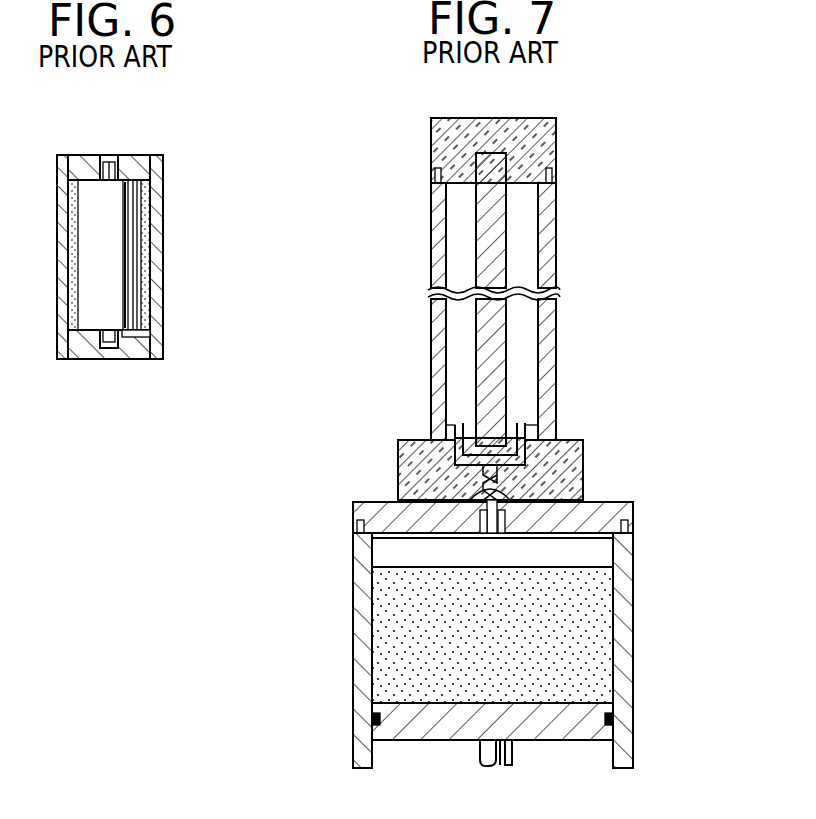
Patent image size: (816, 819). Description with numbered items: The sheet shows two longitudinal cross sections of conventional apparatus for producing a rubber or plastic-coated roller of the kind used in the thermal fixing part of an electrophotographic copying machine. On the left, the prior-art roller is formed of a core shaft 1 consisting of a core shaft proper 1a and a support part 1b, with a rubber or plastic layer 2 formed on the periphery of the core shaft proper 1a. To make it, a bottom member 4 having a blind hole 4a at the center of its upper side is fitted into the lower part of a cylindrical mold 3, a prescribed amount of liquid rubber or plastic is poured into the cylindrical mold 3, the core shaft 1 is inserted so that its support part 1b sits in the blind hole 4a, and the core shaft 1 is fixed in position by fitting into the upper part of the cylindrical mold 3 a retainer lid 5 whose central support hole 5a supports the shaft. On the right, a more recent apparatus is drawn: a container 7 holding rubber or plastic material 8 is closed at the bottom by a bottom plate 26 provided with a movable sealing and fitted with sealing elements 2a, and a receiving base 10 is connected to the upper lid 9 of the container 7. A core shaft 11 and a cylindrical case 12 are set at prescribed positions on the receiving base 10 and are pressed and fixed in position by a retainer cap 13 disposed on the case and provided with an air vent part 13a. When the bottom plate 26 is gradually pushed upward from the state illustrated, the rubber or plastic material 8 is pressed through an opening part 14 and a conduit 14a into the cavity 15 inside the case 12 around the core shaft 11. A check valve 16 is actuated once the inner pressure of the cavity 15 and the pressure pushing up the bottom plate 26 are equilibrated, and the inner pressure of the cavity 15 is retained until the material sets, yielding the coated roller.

In FIG. 6, the core shaft 1 is at (121, 258).
In FIG. 6, the core shaft proper 1a is at (133, 280).
In FIG. 6, the support part 1b is at (150, 338).
In FIG. 6, the rubber or plastic layer 2 is at (150, 209).
In FIG. 7, the seal ring 2a is at (614, 718).
In FIG. 6, the cylindrical mold 3 is at (163, 163).
In FIG. 6, the bottom member 4 is at (124, 352).
In FIG. 6, the blind hole 4a is at (112, 330).
In FIG. 6, the retainer lid 5 is at (140, 167).
In FIG. 6, the support hole 5a is at (106, 153).
In FIG. 7, the container 7 is at (634, 632).
In FIG. 7, the rubber or plastic material 8 is at (596, 600).
In FIG. 7, the upper lid 9 is at (612, 502).
In FIG. 7, the receiving base 10 is at (571, 434).
In FIG. 7, the core shaft 11 is at (494, 225).
In FIG. 7, the cylindrical case 12 is at (431, 343).
In FIG. 7, the retainer cap 13 is at (557, 128).
In FIG. 7, the air vent part 13a is at (553, 164).
In FIG. 7, the opening part 14 is at (486, 539).
In FIG. 7, the conduit 14a is at (460, 425).
In FIG. 7, the cavity 15 is at (541, 322).
In FIG. 7, the check valve 16 is at (500, 470).
In FIG. 7, the bottom plate 26 is at (592, 707).